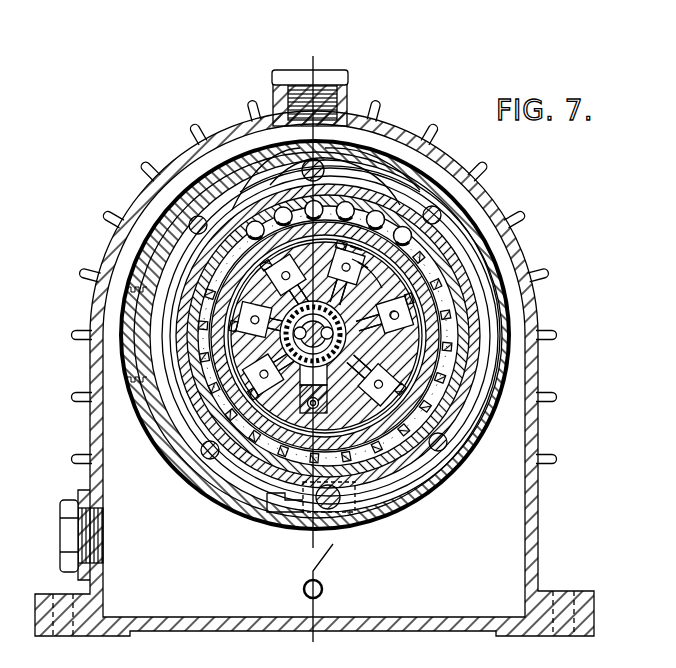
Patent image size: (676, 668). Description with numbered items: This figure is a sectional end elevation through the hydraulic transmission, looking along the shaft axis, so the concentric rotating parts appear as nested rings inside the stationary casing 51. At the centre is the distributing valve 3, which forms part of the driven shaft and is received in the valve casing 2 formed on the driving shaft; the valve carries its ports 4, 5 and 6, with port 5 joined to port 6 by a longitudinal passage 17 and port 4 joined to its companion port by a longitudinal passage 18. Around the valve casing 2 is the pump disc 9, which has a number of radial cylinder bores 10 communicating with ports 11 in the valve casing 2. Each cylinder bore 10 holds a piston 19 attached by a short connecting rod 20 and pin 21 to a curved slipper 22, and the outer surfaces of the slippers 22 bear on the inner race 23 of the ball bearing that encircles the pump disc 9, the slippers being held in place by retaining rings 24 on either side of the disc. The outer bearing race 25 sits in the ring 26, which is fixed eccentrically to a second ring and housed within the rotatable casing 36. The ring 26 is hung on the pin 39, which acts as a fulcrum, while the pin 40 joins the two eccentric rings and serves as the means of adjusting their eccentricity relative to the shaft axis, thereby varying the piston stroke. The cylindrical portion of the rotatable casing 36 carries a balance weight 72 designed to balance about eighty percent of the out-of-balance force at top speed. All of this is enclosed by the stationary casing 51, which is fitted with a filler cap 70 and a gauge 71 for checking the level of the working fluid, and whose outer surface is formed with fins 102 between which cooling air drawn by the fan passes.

The valve casing 2 is at (300, 308).
The distributing valve 3 is at (325, 336).
The port 4 is at (340, 316).
The port 5 is at (270, 370).
The port 6 is at (318, 348).
The pump disc 9 is at (372, 282).
The radial cylinder bores 10 is at (328, 385).
The ports 11 is at (394, 338).
The longitudinal passage 17 is at (262, 322).
The longitudinal passage 18 is at (387, 321).
The piston 19 is at (369, 325).
The connecting rod 20 is at (352, 253).
The pin 21 is at (362, 265).
The curved slipper 22 is at (410, 226).
The inner race 23 is at (420, 273).
The retaining rings 24 is at (341, 420).
The outer bearing race 25 is at (432, 372).
The ring 26 is at (448, 420).
The rotatable casing 36 is at (371, 152).
The pin 39 is at (297, 160).
The pin 40 is at (340, 506).
The stationary casing 51 is at (180, 620).
The filler cap 70 is at (347, 77).
The gauge 71 is at (66, 533).
The balance weight 72 is at (147, 274).
The fins 102 is at (188, 126).